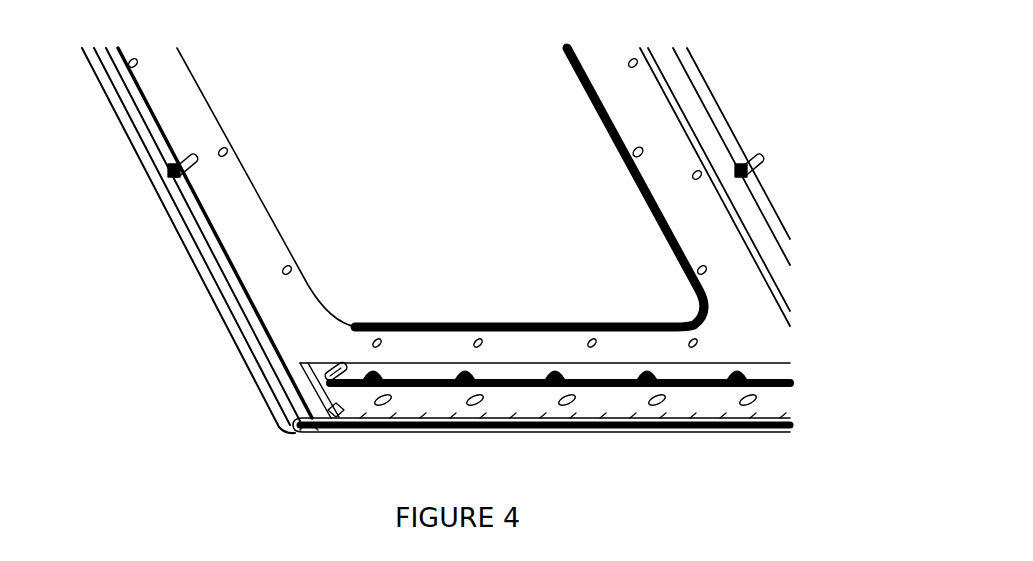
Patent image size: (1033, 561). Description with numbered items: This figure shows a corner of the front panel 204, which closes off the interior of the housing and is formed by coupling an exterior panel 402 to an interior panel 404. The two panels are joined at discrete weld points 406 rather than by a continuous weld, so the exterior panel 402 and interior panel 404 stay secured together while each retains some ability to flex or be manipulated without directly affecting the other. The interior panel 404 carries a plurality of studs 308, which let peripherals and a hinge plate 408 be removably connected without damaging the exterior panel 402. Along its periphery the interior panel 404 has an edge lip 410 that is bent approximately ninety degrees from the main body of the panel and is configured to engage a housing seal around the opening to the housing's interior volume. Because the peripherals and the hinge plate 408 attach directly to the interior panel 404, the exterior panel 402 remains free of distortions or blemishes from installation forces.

The front panel 204 is at (262, 157).
The studs 308 is at (345, 362).
The exterior panel 402 is at (298, 421).
The interior panel 404 is at (267, 300).
The discrete weld points 406 is at (633, 152).
The hinge plate 408 is at (512, 412).
The edge lip 410 is at (278, 353).